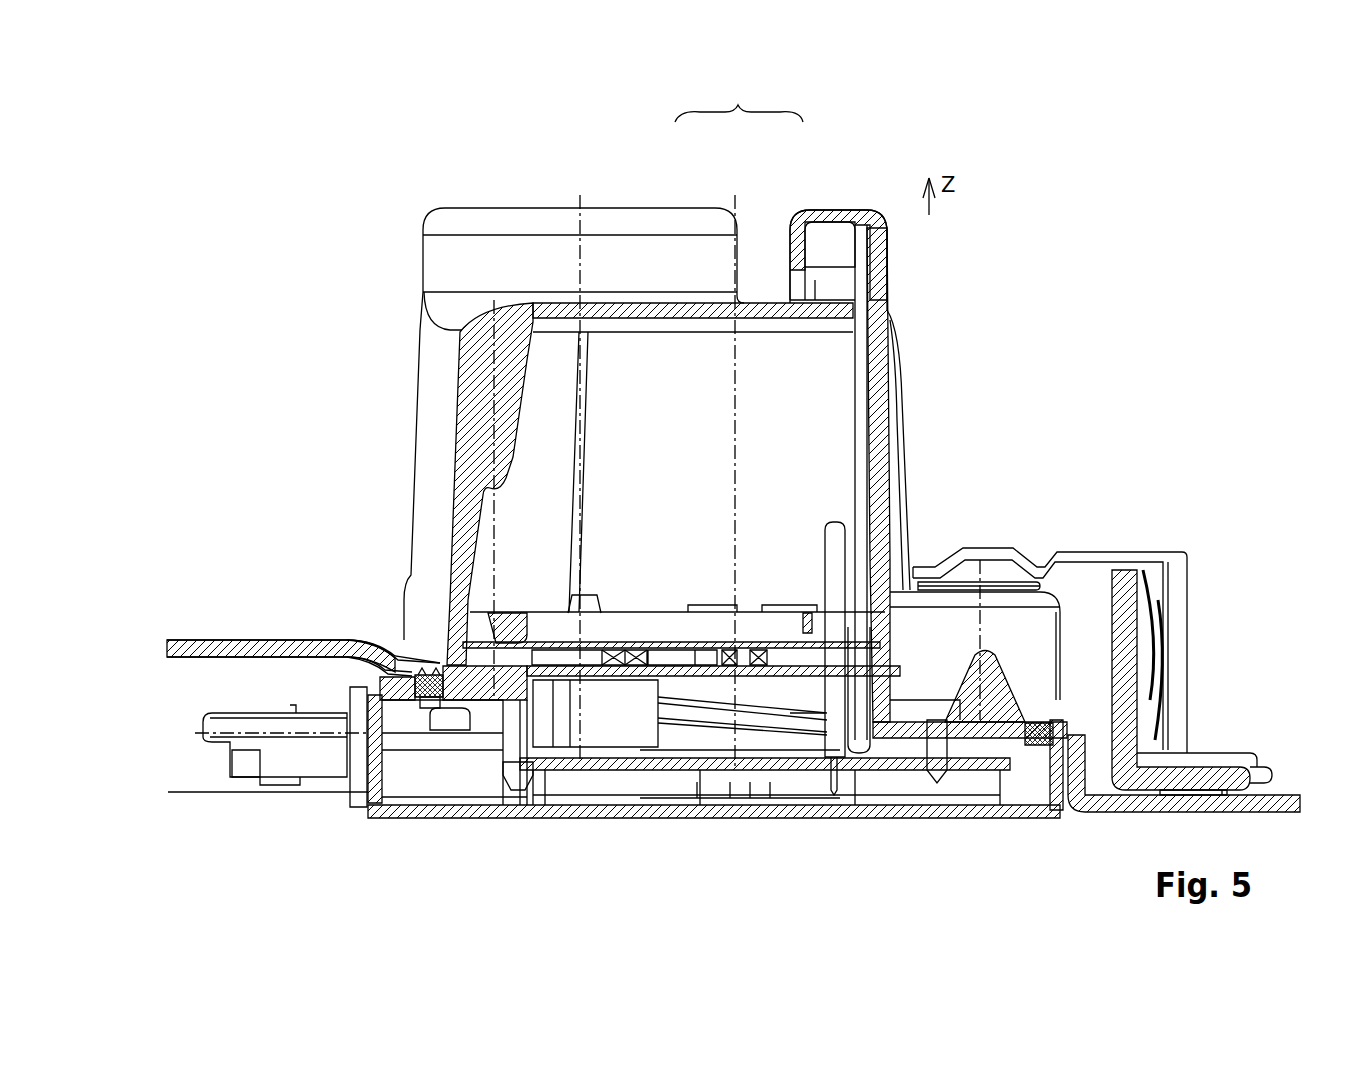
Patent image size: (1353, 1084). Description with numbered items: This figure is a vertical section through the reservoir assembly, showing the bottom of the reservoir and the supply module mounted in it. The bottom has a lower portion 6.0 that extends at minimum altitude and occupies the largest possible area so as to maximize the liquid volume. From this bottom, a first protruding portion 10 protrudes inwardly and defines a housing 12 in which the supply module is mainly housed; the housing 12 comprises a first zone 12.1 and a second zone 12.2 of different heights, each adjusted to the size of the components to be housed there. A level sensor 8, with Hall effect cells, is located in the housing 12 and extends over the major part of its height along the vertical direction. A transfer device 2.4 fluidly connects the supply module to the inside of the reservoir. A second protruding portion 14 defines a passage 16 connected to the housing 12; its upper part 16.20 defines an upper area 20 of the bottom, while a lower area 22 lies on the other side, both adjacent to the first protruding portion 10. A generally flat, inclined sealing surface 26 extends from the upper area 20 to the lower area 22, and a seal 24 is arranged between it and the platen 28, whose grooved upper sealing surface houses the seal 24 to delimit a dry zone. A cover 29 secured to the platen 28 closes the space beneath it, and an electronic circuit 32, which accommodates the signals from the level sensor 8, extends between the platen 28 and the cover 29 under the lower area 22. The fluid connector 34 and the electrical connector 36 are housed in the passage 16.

The first protruding portion 10 is at (530, 262).
The housing 12 is at (739, 101).
The first zone 12.1 is at (835, 270).
The second zone 12.2 is at (648, 338).
The level sensor 8 is at (858, 417).
The transfer device 2.4 is at (1137, 547).
The lower portion 6.0 is at (1282, 787).
The second protruding portion 14 is at (208, 642).
The upper part 16.20 is at (305, 636).
The passage 16 is at (193, 690).
The upper area 20 is at (425, 655).
The lower area 22 is at (905, 680).
The seal 24 is at (422, 708).
The sealing surface 26 is at (390, 700).
The platen 28 is at (483, 700).
The cover 29 is at (666, 820).
The electronic circuit 32 is at (793, 772).
The fluid connector 34 is at (205, 742).
The electrical connector 36 is at (250, 752).